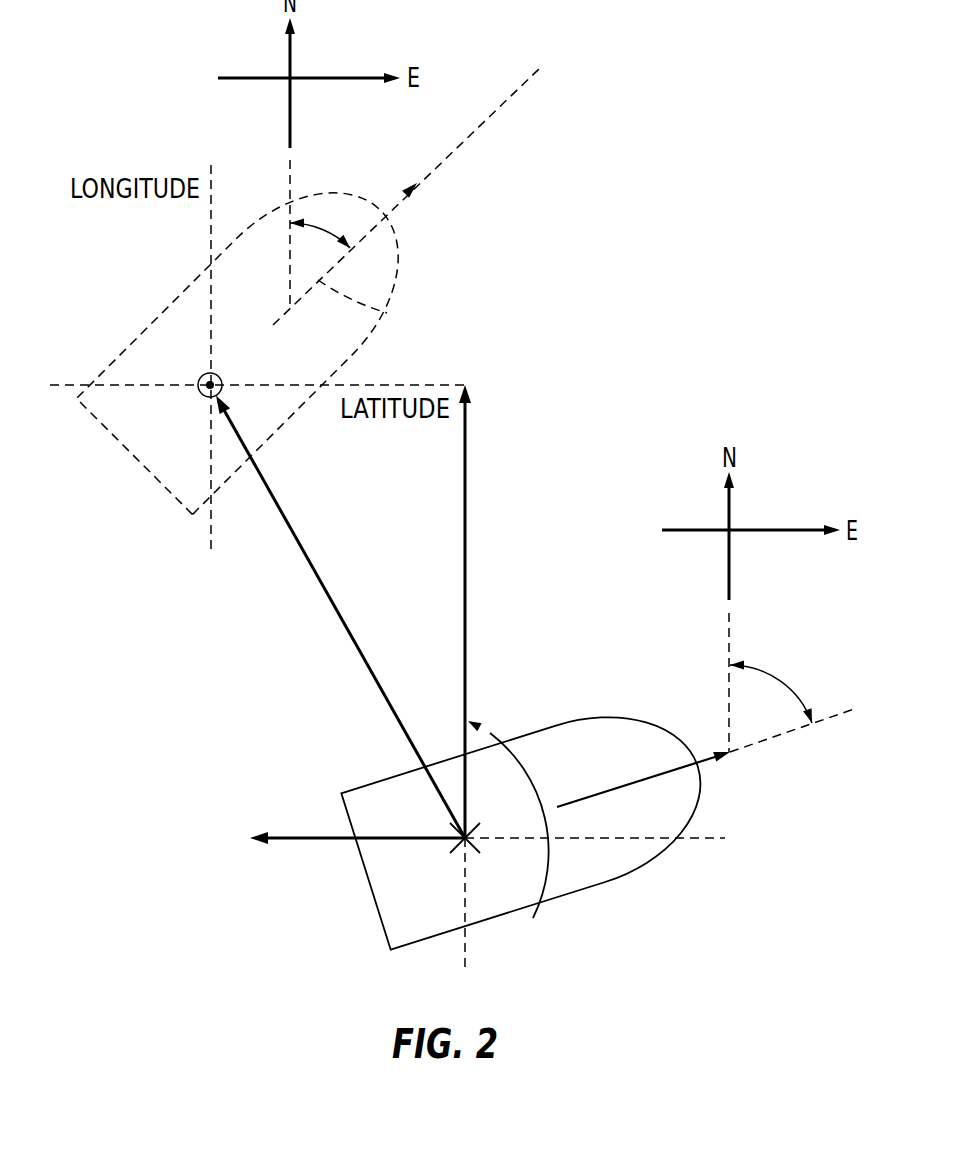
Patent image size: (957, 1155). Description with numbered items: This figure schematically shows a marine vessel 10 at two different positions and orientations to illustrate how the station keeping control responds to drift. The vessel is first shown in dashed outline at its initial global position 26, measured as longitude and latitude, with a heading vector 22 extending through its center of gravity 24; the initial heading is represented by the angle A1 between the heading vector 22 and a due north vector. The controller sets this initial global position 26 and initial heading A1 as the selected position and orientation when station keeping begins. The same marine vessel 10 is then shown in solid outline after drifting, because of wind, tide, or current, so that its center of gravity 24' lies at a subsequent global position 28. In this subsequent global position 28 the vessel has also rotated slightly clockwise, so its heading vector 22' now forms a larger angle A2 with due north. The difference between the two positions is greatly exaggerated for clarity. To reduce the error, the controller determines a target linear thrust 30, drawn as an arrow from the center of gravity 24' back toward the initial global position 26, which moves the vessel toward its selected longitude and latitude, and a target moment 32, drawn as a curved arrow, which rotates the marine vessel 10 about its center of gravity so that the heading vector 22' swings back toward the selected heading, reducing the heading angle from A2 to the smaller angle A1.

The marine vessel 10 is at (403, 270).
The heading vector 22 is at (381, 305).
The heading vector 22' is at (643, 735).
The center of gravity 24 is at (149, 350).
The center of gravity 24' is at (396, 884).
The initial global position 26 is at (477, 222).
The subsequent global position 28 is at (768, 778).
The target linear thrust 30 is at (320, 585).
The target moment 32 is at (553, 858).
The initial heading angle A1 is at (327, 226).
The actual heading angle A2 is at (777, 678).